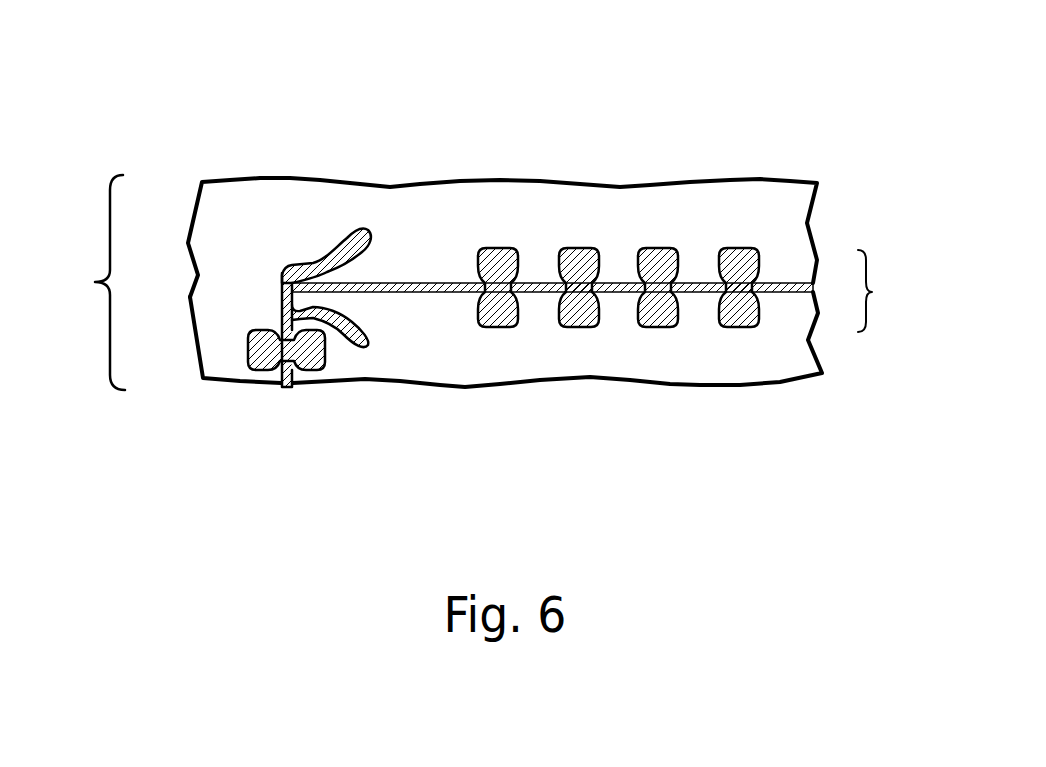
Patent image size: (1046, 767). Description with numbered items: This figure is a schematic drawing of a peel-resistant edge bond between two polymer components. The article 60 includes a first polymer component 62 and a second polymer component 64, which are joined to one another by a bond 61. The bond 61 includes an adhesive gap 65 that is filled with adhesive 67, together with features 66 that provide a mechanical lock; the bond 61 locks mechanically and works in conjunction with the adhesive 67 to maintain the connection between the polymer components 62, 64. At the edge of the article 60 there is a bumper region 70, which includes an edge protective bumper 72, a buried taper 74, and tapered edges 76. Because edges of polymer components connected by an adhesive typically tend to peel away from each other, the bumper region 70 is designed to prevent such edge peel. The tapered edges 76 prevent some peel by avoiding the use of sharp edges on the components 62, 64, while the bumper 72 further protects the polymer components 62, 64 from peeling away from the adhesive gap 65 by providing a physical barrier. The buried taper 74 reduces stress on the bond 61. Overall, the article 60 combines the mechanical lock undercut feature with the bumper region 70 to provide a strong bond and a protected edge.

The article 60 is at (840, 123).
The bond 61 is at (872, 292).
The first polymer component 62 is at (677, 230).
The second polymer component 64 is at (705, 362).
The adhesive gap 65 is at (818, 289).
The features 66 is at (513, 303).
The adhesive 67 is at (739, 248).
The bumper region 70 is at (398, 392).
The edge protective bumper 72 is at (91, 282).
The buried taper 74 is at (365, 230).
The tapered edges 76 is at (283, 272).